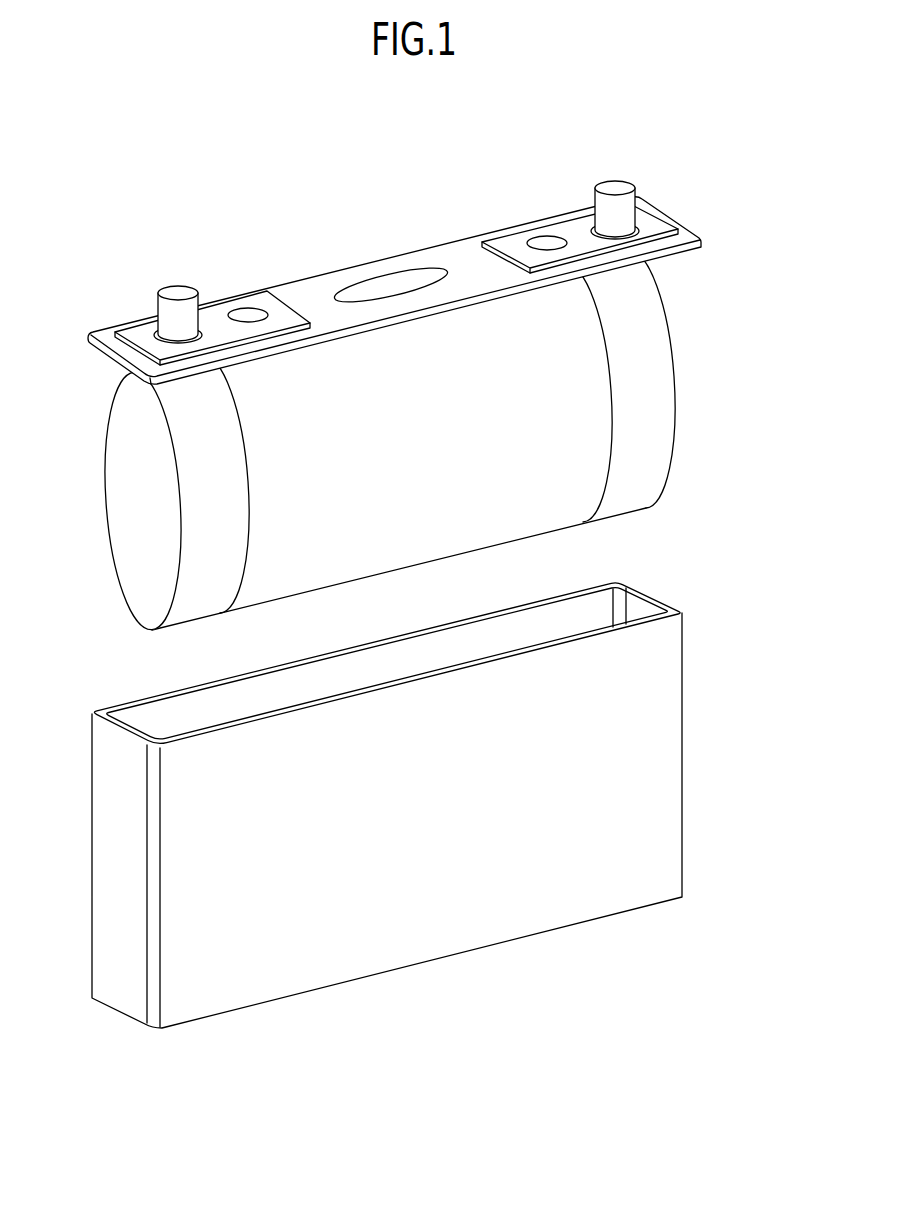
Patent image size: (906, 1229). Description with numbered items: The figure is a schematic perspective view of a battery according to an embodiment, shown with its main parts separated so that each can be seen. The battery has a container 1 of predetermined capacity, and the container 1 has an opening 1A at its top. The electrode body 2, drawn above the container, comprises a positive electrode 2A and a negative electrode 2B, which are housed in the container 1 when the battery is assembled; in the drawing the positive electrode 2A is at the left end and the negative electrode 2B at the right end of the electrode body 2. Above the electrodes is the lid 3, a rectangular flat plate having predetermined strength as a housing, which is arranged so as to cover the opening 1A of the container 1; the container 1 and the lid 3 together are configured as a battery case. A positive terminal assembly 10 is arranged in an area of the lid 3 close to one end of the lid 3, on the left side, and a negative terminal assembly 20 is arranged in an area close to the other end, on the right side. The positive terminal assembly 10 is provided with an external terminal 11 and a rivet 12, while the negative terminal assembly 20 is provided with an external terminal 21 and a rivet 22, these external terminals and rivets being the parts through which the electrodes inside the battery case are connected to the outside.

The container 1 is at (683, 745).
The opening 1A is at (643, 608).
The capacitor element 2 is at (675, 298).
The positive electrode 2A is at (210, 510).
The negative electrode 2B is at (662, 366).
The lid 3 is at (383, 258).
The positive terminal assembly 10 is at (223, 286).
The external terminal 11 is at (177, 289).
The rivet 12 is at (250, 313).
The negative terminal assembly 20 is at (545, 207).
The external terminal 21 is at (617, 187).
The rivet 22 is at (547, 242).